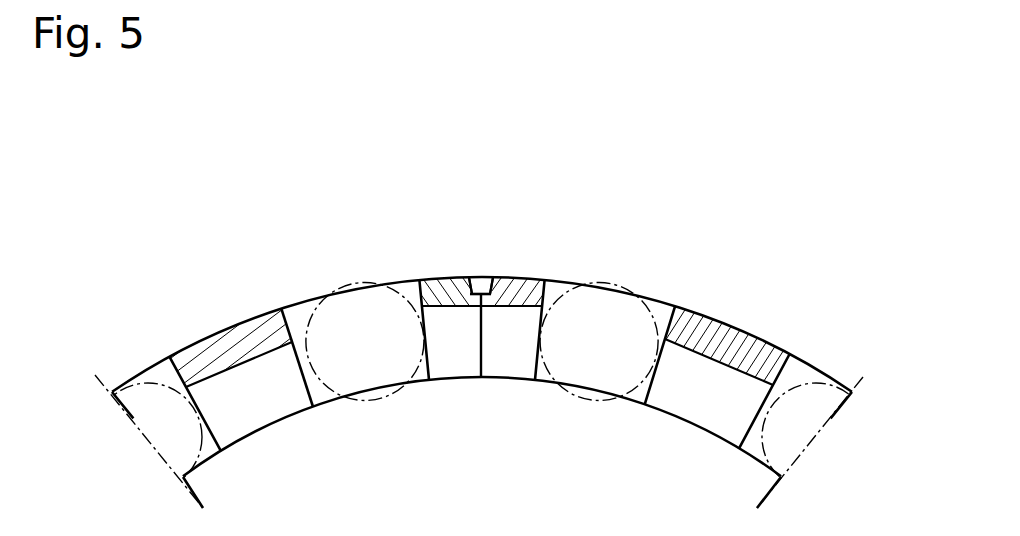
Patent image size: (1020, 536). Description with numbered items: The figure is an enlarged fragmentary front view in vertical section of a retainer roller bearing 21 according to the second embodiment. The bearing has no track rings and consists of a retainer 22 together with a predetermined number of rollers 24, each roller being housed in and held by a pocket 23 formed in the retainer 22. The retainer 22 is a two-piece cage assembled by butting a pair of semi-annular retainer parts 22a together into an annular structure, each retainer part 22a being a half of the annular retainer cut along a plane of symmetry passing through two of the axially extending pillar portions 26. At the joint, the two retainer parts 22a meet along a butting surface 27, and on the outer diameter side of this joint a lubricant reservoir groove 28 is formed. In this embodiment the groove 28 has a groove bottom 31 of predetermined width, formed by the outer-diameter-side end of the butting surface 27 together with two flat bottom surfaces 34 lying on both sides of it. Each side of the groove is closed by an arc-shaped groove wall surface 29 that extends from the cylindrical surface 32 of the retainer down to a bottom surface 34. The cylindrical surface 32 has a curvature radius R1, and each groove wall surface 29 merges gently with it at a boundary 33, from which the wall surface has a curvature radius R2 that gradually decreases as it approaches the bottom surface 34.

The retainer roller bearing 21 is at (827, 365).
The retainer 22 is at (774, 346).
The retainer part 22a is at (204, 350).
The pocket 23 is at (322, 406).
The roller 24 is at (342, 272).
The pillar portion 26 is at (420, 278).
The butting surface 27 is at (479, 350).
The lubricant reservoir groove 28 is at (481, 272).
The groove wall surface 29 is at (462, 277).
The groove bottom 31 is at (488, 294).
The cylindrical surface 32 is at (248, 318).
The boundary 33 is at (450, 273).
The bottom surface 34 is at (469, 273).
The curvature radius of cylindrical surface R1 is at (243, 323).
The curvature radius of groove wall surface R2 is at (465, 280).